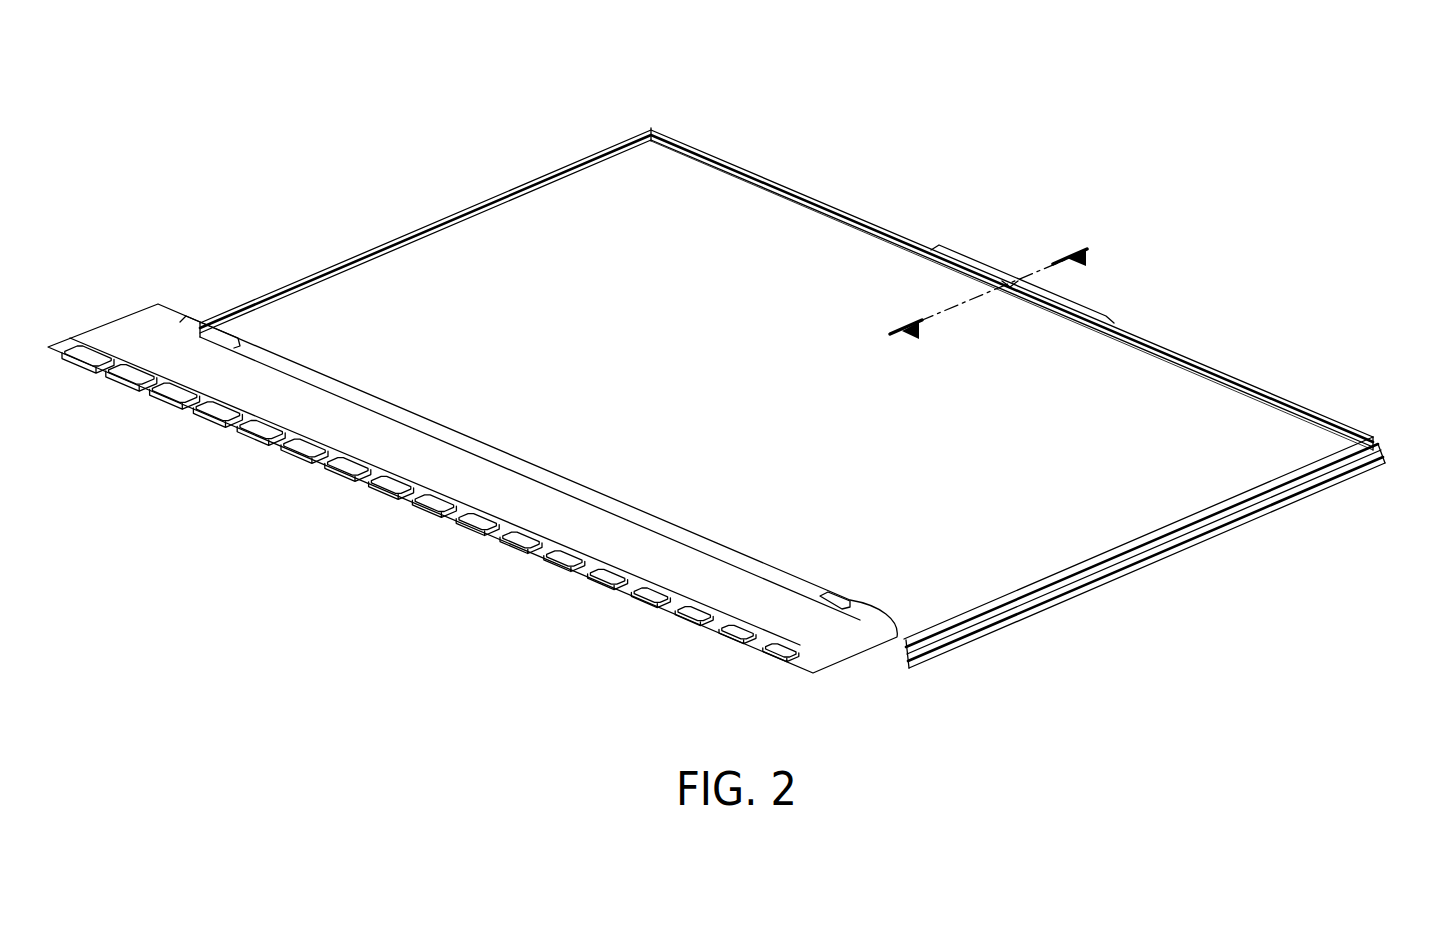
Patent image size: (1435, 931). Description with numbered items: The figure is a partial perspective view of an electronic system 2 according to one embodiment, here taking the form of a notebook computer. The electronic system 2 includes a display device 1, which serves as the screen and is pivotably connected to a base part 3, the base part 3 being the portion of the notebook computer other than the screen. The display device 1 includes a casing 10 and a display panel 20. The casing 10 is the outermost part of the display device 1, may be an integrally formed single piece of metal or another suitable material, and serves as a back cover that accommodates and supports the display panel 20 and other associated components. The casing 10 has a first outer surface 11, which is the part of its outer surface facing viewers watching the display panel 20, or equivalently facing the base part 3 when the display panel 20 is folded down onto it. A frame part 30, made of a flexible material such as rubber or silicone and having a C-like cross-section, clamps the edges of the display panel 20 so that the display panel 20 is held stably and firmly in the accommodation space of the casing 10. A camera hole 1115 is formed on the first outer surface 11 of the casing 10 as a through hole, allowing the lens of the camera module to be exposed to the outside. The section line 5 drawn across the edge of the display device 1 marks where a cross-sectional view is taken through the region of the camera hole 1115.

The electronic system 2 is at (340, 100).
The display device 1 is at (1299, 381).
The casing 10 is at (1280, 497).
The display panel 20 is at (1348, 424).
The frame part 30 is at (1085, 512).
The first outer surface 11 is at (963, 255).
The camera hole 1115 is at (1010, 286).
The section line 5 is at (918, 330).
The base part 3 is at (805, 624).